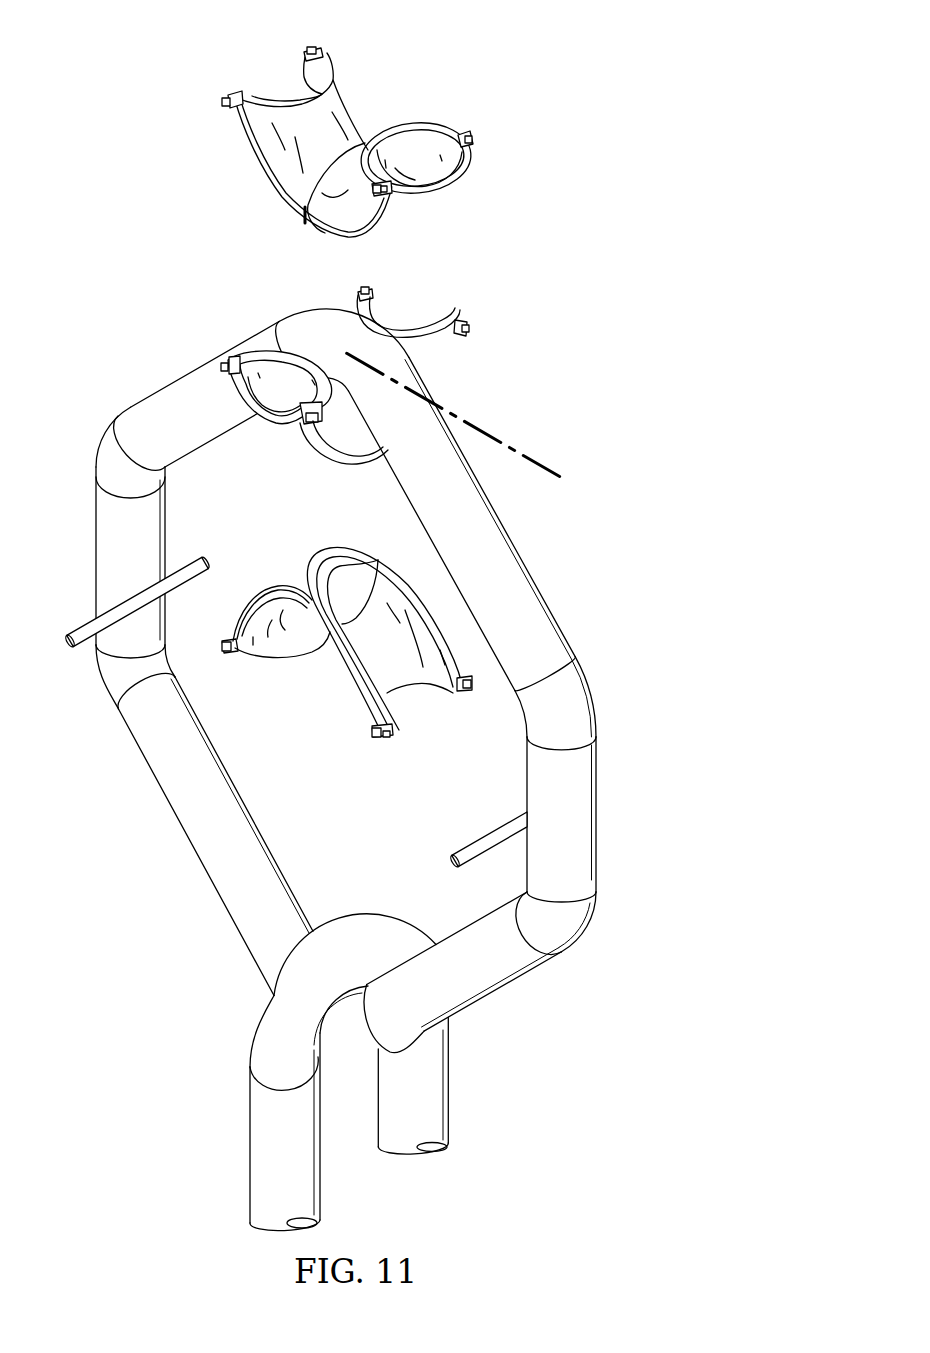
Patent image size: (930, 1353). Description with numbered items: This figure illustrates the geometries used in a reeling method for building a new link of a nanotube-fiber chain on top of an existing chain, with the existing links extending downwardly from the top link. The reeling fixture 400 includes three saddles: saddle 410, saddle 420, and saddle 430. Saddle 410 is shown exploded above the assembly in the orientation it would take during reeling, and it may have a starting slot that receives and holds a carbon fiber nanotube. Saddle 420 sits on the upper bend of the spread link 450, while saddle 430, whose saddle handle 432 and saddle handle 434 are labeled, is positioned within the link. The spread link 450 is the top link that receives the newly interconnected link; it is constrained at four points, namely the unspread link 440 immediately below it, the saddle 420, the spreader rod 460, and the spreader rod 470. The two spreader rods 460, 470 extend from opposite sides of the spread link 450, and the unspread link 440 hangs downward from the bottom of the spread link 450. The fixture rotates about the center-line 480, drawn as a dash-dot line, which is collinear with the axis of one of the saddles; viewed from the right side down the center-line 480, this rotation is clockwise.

The reeling fixture 400 is at (388, 88).
The saddle 410 is at (232, 130).
The saddle 420 is at (457, 367).
The saddle 430 is at (281, 662).
The saddle handle 432 is at (466, 690).
The saddle handle 434 is at (384, 738).
The unspread link 440 is at (250, 1147).
The spread link 450 is at (191, 843).
The spreader rod 460 is at (72, 626).
The spreader rod 470 is at (490, 834).
The center-line 480 is at (534, 458).